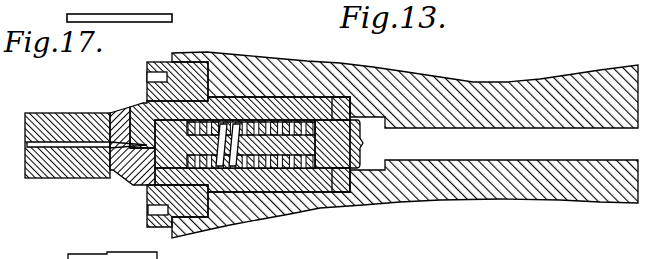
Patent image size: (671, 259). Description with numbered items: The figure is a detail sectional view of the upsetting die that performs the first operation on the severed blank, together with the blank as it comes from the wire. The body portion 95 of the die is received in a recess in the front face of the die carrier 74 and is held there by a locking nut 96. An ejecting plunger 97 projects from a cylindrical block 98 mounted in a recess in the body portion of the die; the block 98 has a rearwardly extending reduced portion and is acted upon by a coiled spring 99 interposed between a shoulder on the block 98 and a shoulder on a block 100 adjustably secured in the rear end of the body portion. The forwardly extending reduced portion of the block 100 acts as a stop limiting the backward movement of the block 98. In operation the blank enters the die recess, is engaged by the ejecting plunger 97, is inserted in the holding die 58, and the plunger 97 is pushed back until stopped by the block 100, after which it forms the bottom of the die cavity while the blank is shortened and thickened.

The blank holding die 58 is at (56, 117).
The die carrier 74 is at (488, 88).
The body portion 95 is at (235, 105).
The locking nut 96 is at (160, 88).
The ejecting plunger 97 is at (115, 172).
The cylindrical block 98 is at (146, 184).
The coiled spring 99 is at (247, 136).
The block 100 is at (327, 140).